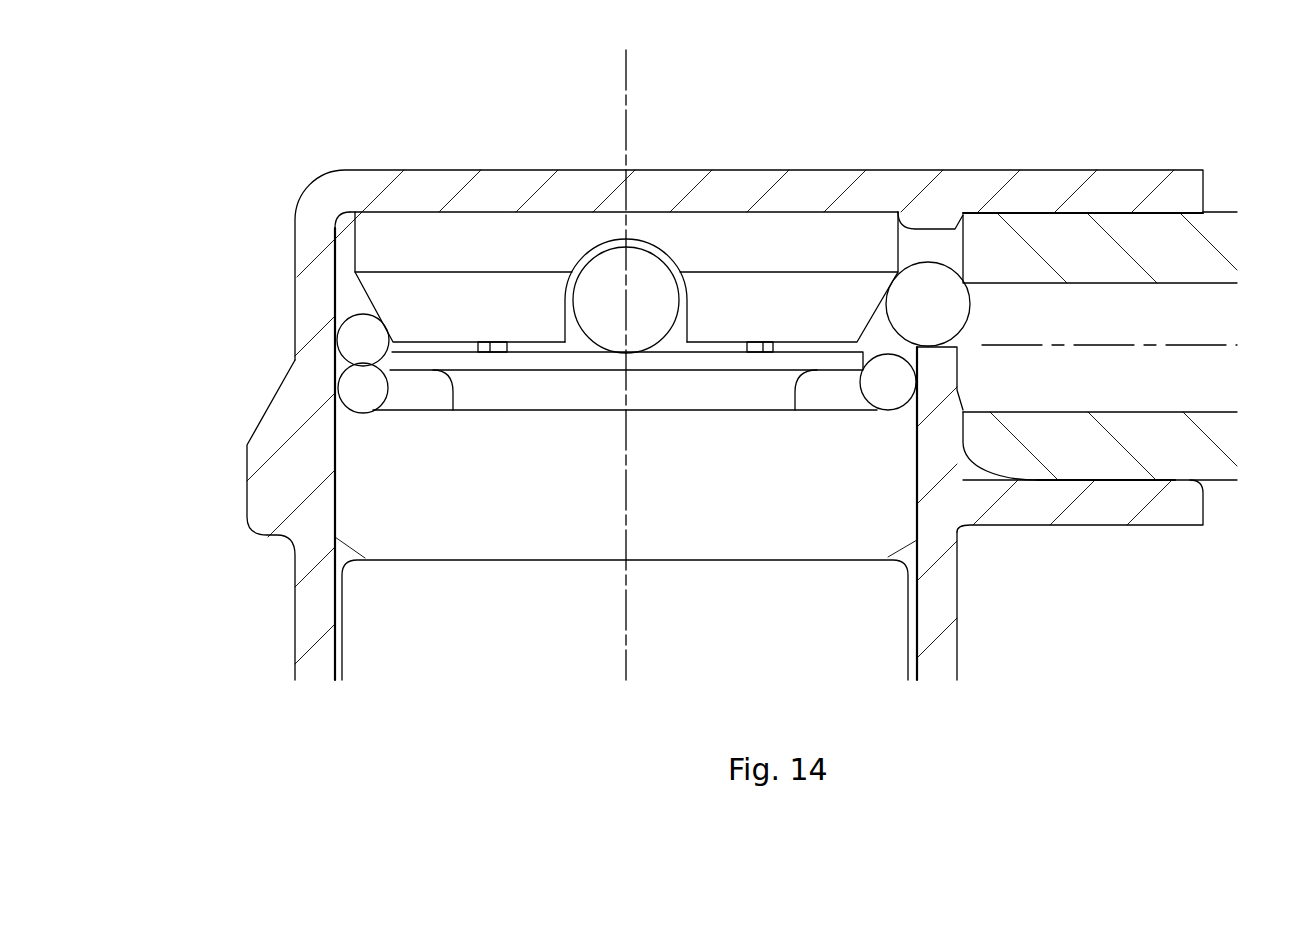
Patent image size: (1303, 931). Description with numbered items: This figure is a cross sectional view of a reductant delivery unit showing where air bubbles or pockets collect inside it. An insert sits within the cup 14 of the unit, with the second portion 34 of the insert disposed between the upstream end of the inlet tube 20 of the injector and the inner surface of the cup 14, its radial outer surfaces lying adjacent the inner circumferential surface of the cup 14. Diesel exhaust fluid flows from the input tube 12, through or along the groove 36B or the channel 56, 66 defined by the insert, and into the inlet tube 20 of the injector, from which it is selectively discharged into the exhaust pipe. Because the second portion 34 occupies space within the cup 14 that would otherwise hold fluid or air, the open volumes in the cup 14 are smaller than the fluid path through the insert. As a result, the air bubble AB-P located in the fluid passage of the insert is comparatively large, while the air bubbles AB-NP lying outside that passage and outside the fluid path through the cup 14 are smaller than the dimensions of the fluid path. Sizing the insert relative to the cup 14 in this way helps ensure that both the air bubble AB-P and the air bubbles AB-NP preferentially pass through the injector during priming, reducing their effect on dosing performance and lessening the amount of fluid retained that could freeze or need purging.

The input tube 12 is at (1218, 225).
The cup 14 is at (880, 172).
The inlet tube 20 is at (535, 390).
The second portion 34 is at (393, 225).
The groove 36B is at (712, 218).
The channel 56 is at (712, 218).
The channel 66 is at (687, 330).
The air bubble in fluid passage AB-P is at (595, 252).
The air bubbles not in fluid passage AB-NP is at (340, 321).